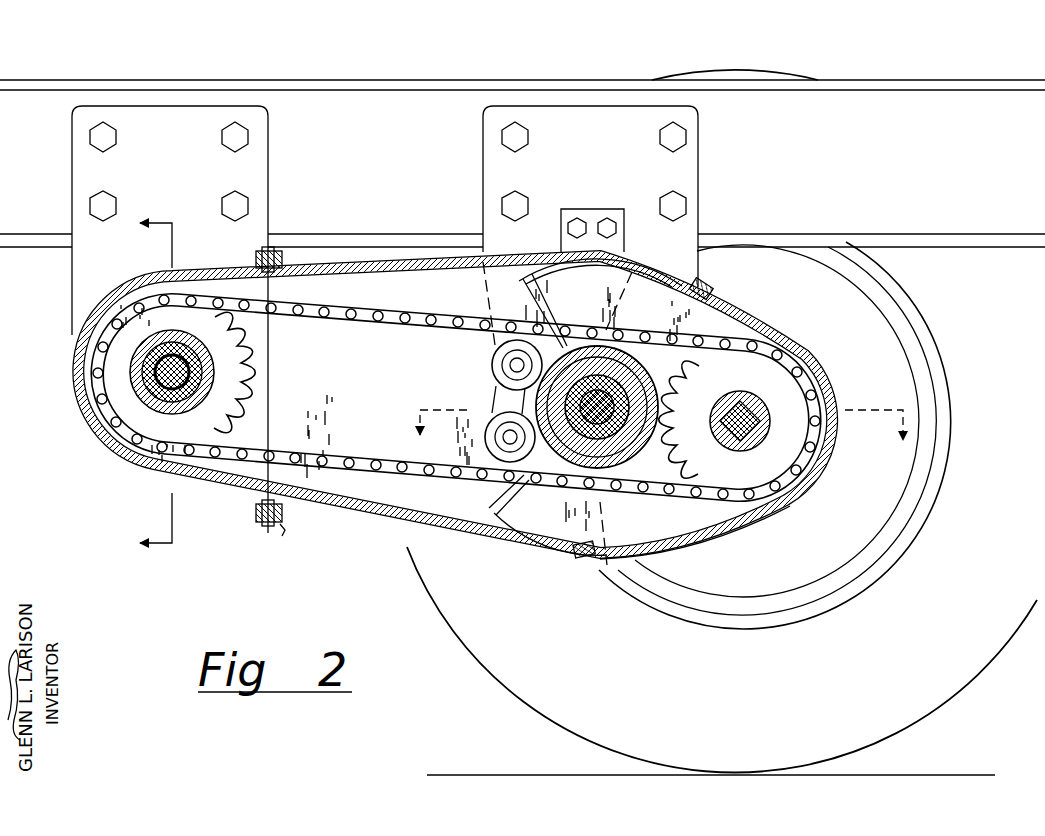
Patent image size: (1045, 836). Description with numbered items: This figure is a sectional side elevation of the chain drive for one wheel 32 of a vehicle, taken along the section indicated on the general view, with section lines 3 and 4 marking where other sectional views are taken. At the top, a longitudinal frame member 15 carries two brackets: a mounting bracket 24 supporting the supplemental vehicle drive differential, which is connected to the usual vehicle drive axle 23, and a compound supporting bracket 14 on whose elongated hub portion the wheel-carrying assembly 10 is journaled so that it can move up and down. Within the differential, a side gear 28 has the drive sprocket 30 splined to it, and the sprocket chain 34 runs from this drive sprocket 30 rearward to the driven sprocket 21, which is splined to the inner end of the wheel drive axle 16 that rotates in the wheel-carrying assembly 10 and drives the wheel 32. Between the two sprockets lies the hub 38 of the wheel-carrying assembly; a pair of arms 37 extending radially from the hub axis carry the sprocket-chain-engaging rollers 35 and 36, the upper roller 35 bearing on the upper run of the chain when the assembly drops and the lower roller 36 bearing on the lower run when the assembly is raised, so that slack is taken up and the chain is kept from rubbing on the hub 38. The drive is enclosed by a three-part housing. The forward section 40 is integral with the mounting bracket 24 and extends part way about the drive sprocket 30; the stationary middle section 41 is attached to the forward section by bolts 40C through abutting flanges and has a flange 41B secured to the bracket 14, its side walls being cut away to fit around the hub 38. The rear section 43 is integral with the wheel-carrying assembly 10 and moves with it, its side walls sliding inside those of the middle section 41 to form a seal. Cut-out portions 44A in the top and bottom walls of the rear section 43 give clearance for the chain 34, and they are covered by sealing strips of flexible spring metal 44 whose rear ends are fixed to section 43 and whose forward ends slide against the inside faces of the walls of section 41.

The compound supporting bracket 14 is at (563, 113).
The longitudinal frame member 15 is at (857, 97).
The mounting bracket 24 is at (245, 165).
The flange 41B is at (587, 218).
The sealing strips of flexible spring metal 44 is at (700, 222).
The cut-out portions 44A is at (703, 245).
The vehicle drive axle 23 is at (135, 360).
The drive sprocket 30 is at (120, 392).
The side gear 28 is at (150, 430).
The forward section of the housing 40 is at (260, 497).
The bolts 40C is at (284, 525).
The middle section of the housing 41 is at (358, 490).
The sprocket chain 34 is at (353, 322).
The upper sprocket-chain-engaging roller 35 is at (500, 363).
The lower sprocket-chain-engaging roller 36 is at (490, 440).
The arms 37 is at (527, 427).
The hub 38 is at (615, 355).
The wheel-carrying assembly 10 is at (687, 372).
The driven sprocket 21 is at (763, 373).
The wheel drive axle 16 is at (752, 405).
The rear section of the housing 43 is at (707, 507).
The wheel 32 is at (497, 663).
The section line 3- 3 is at (158, 388).
The section line 4- 4 is at (652, 412).